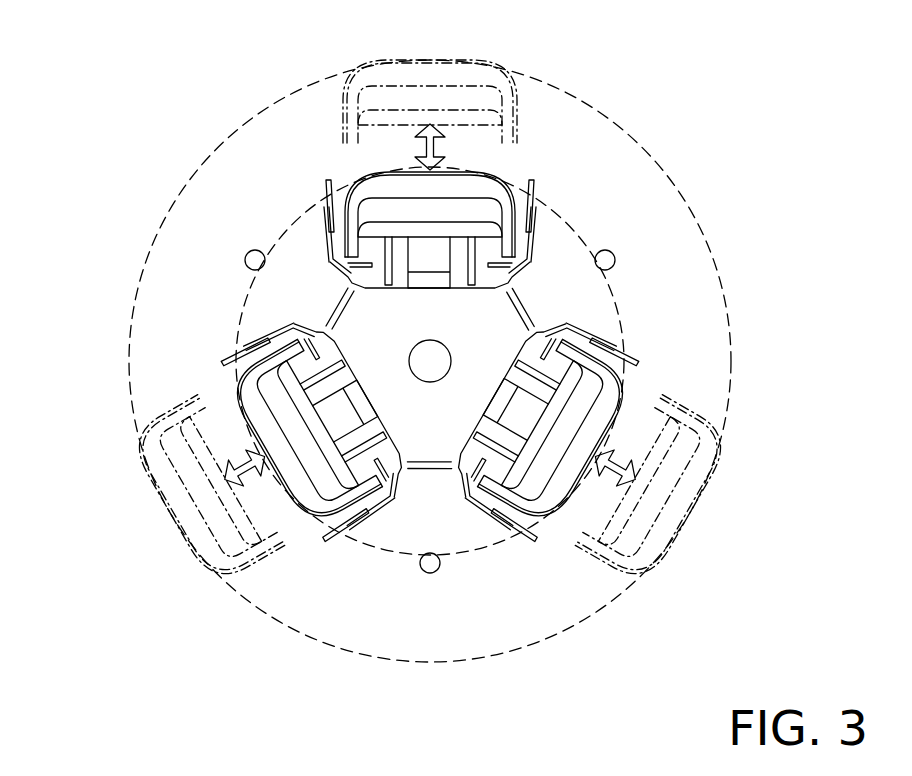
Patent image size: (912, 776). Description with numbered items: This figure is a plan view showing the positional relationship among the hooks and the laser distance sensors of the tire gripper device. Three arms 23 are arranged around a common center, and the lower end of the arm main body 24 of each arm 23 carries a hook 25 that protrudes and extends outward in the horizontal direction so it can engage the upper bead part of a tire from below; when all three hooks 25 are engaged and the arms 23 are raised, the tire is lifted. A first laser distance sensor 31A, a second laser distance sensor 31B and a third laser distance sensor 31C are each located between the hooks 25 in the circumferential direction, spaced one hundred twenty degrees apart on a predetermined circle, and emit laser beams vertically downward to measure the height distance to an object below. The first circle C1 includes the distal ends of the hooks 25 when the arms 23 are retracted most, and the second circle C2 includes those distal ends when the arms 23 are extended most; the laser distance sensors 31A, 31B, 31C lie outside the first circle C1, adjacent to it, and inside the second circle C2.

The arm 23 is at (452, 255).
The arm main body 24 is at (417, 250).
The hook 25 is at (475, 190).
The first laser distance sensor 31A is at (606, 260).
The second laser distance sensor 31B is at (255, 260).
The third laser distance sensor 31C is at (431, 564).
The first circle C1 is at (297, 222).
The second circle C2 is at (280, 102).